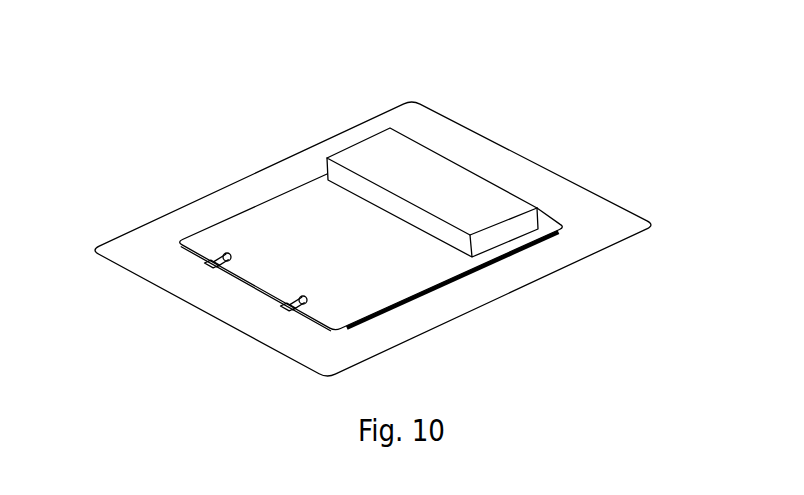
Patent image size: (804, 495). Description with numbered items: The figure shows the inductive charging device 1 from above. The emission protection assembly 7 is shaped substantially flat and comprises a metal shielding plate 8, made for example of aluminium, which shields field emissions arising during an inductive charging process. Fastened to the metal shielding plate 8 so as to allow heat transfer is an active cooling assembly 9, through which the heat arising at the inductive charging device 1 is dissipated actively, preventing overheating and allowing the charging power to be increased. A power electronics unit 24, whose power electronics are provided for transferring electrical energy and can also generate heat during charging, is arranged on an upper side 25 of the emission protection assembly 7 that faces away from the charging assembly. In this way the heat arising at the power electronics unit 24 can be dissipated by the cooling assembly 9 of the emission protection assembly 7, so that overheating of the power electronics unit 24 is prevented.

The inductive charging device 1 is at (133, 117).
The emission protection assembly 7 is at (371, 206).
The metal shielding plate 8 is at (628, 227).
The active cooling assembly 9 is at (250, 223).
The power electronics unit 24 is at (455, 178).
The upper side 25 is at (580, 200).